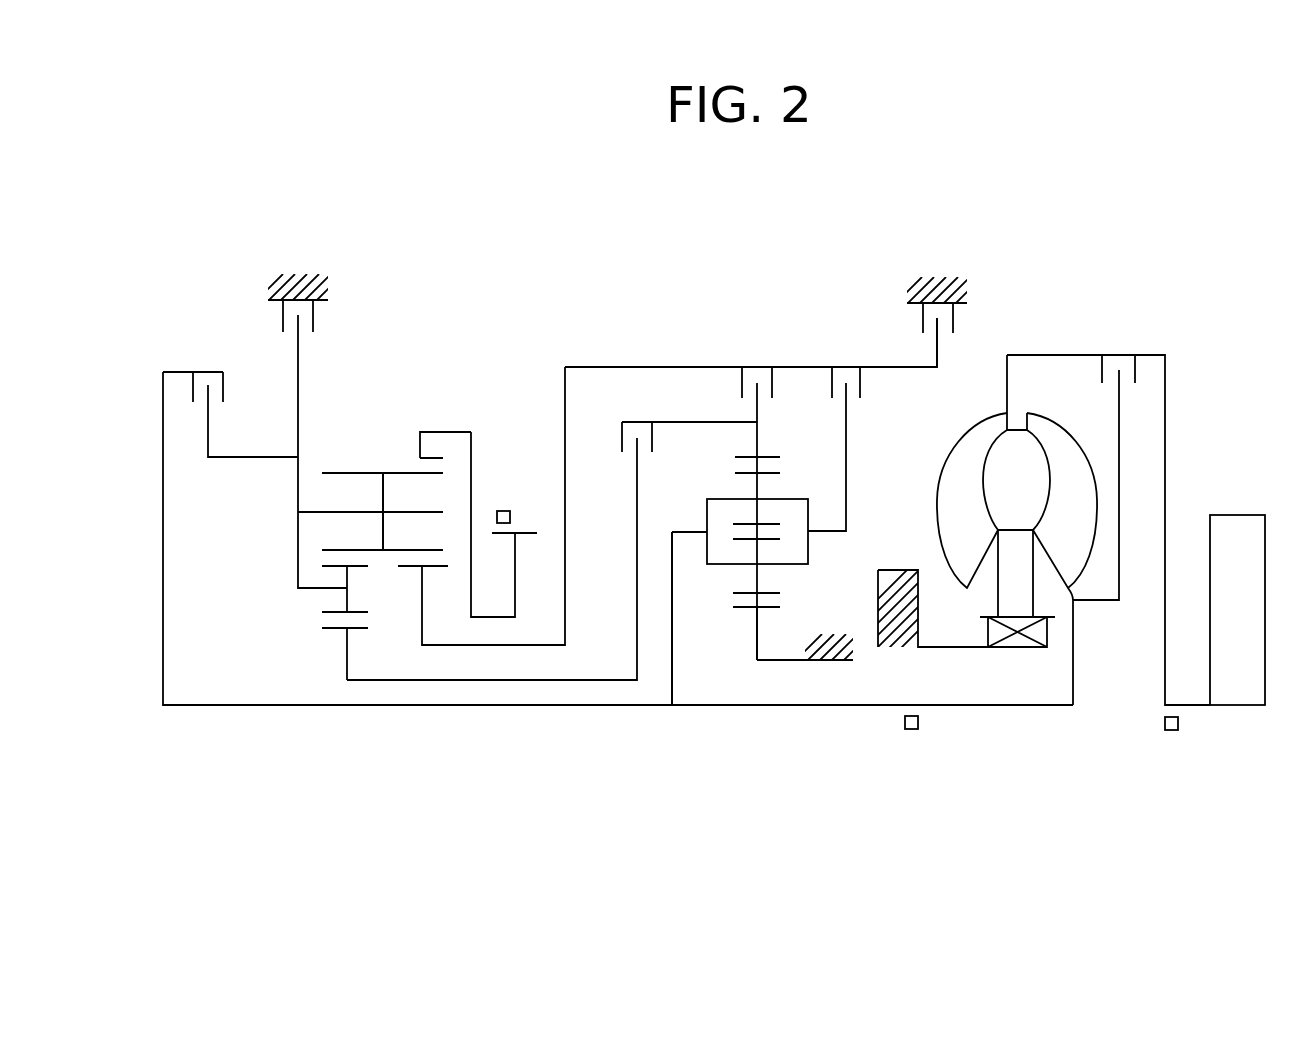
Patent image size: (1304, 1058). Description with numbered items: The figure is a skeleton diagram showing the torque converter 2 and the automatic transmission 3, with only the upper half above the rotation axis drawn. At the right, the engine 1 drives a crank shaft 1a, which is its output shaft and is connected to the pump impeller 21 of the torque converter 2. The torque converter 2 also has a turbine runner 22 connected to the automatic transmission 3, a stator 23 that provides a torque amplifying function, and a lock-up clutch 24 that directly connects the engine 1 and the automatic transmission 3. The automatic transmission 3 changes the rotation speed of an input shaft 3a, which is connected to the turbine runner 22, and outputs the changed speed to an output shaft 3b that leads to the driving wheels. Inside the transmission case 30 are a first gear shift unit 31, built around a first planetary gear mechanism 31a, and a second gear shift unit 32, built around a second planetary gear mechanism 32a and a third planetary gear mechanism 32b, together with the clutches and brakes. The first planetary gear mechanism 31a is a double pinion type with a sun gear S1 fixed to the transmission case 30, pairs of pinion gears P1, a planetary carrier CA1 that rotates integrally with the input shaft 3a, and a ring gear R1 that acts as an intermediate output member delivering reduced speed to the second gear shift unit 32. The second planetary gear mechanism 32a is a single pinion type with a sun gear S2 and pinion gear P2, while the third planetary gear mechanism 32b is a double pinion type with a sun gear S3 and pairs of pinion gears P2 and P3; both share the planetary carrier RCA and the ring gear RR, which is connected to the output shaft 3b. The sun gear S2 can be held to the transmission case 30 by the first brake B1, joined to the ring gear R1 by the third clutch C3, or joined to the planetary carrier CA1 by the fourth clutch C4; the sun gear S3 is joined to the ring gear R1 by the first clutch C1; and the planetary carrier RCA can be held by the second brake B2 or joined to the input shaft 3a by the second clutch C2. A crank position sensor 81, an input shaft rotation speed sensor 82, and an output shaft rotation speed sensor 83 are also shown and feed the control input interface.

The engine 1 is at (1248, 515).
The crank shaft 1a is at (1190, 707).
The torque converter 2 is at (1038, 491).
The pump impeller 21 is at (962, 430).
The turbine runner 22 is at (1068, 430).
The stator 23 is at (1018, 530).
The lock-up clutch 24 is at (1128, 347).
The automatic transmission 3 is at (729, 294).
The input shaft 3a is at (795, 707).
The output shaft 3b is at (527, 533).
The transmission case 30 is at (318, 310).
The first gear shift unit 31 is at (790, 480).
The first planetary gear mechanism 31a is at (708, 640).
The second gear shift unit 32 is at (395, 477).
The second planetary gear mechanism 32a is at (420, 660).
The third planetary gear mechanism 32b is at (322, 660).
The crank position sensor 81 is at (1165, 727).
The input shaft rotation speed sensor 82 is at (912, 730).
The output shaft rotation speed sensor 83 is at (503, 510).
The first brake B1 is at (922, 320).
The second brake B2 is at (283, 318).
The first clutch C1 is at (622, 438).
The second clutch C2 is at (193, 386).
The third clutch C3 is at (740, 386).
The fourth clutch C4 is at (863, 386).
The ring gear R1 is at (738, 458).
The pinion gears P1 is at (776, 470).
The planetary carrier CA1 is at (812, 550).
The sun gear S1 is at (745, 608).
The ring gear RR is at (415, 458).
The planetary carrier RCA is at (298, 538).
The pinion gear P2 is at (395, 552).
The pinion gears P3 is at (330, 566).
The sun gear S2 is at (438, 556).
The sun gear S3 is at (330, 628).